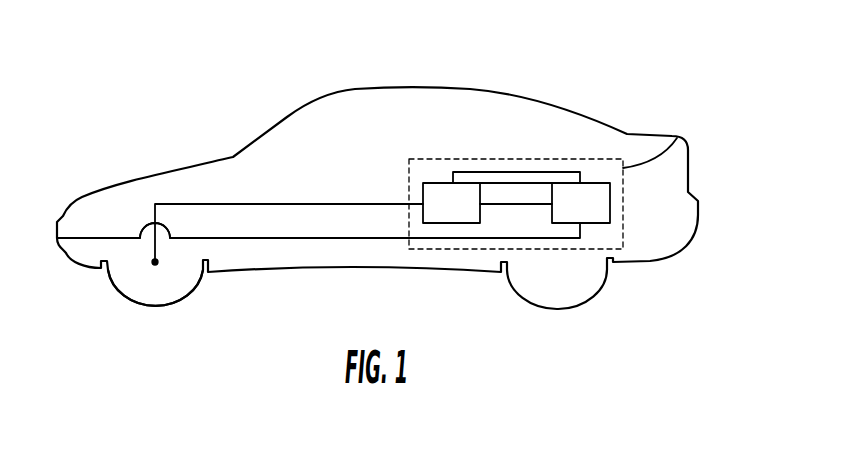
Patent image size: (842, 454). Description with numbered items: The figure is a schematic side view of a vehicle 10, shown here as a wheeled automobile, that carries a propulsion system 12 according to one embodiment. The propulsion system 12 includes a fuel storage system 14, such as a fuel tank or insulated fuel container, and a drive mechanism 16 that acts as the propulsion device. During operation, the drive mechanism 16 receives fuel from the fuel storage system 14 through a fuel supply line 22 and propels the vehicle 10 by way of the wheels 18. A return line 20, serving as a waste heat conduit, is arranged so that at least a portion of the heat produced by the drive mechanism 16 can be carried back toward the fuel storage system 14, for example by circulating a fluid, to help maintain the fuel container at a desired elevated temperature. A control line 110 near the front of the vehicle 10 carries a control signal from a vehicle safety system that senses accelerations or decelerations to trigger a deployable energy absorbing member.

The vehicle 10 is at (610, 69).
The propulsion system 12 is at (676, 137).
The fuel storage system 14 is at (633, 220).
The drive mechanism 16 is at (439, 223).
The wheels 18 is at (177, 292).
The return line 20 is at (501, 172).
The fuel supply line 22 is at (538, 205).
The control line 110 is at (253, 238).